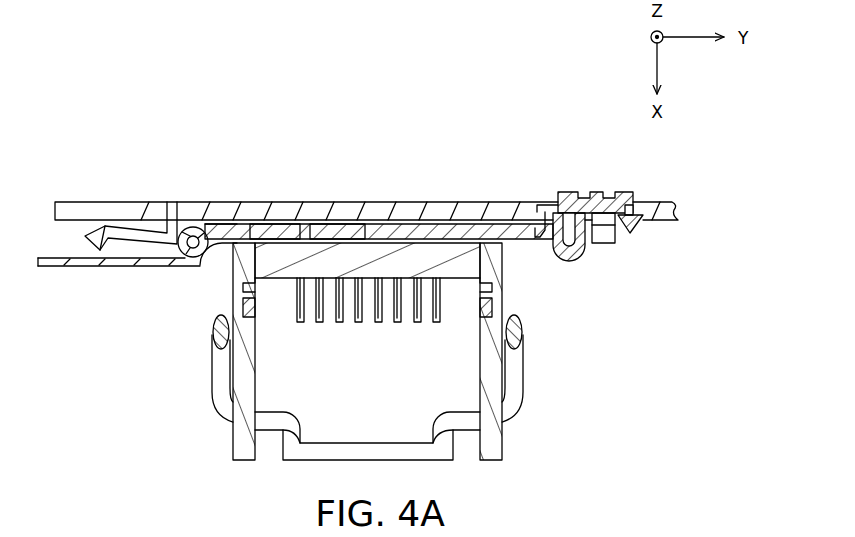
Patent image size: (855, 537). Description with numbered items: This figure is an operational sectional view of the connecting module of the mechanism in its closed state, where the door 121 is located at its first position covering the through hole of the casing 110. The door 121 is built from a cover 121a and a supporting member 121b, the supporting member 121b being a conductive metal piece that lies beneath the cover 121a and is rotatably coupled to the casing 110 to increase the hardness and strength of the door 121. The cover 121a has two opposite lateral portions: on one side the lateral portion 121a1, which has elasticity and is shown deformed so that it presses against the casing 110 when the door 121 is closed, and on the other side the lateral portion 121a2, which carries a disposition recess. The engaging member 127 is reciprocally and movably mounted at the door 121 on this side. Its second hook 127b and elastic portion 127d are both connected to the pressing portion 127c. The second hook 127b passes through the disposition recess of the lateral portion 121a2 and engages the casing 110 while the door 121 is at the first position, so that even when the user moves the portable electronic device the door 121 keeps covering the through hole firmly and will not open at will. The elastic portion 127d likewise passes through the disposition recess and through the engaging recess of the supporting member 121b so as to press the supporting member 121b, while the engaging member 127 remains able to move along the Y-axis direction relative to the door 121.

The casing 110 is at (92, 211).
The door 121 is at (380, 140).
The cover 121a is at (338, 213).
The supporting member 121b is at (281, 223).
The lateral portion 121a1 is at (117, 218).
The lateral portion 121a2 is at (526, 196).
The engaging member 127 is at (636, 230).
The second hook 127b is at (645, 238).
The pressing portion 127c is at (626, 196).
The elastic portion 127d is at (553, 230).